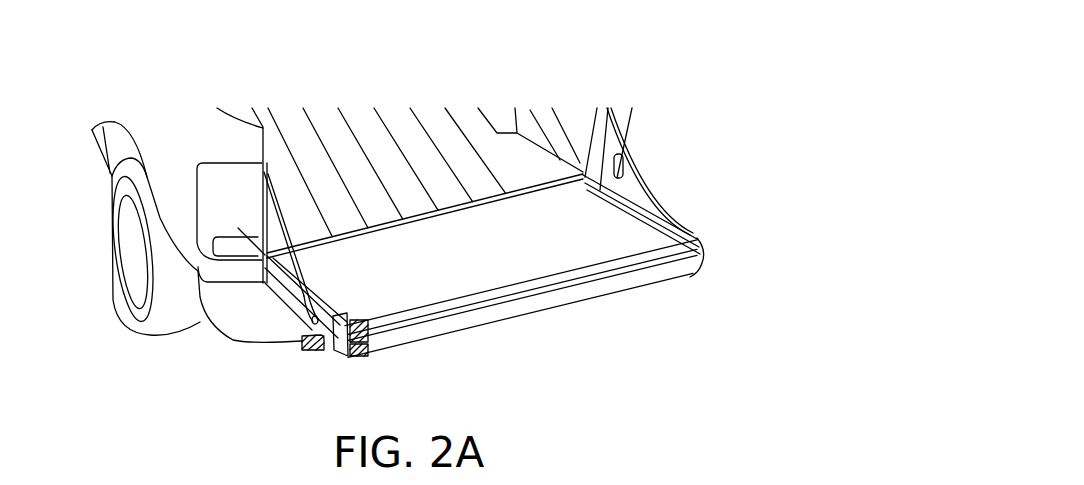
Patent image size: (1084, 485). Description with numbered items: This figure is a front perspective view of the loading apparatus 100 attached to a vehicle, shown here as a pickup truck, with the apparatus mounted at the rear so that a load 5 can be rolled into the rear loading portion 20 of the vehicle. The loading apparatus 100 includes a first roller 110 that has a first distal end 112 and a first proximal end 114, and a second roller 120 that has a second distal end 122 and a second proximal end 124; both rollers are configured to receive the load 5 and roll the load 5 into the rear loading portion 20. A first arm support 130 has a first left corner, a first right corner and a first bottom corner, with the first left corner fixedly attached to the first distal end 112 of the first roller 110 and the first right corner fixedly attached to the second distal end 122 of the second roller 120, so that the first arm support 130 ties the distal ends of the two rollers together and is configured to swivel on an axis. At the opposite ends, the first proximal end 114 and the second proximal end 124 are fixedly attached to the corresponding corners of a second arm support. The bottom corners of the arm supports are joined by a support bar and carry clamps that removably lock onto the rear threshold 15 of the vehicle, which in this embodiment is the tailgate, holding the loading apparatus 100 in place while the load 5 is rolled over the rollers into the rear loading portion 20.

The loading apparatus 100 is at (664, 83).
The load 5 is at (136, 119).
The rear loading portion 20 is at (530, 168).
The first roller 110 is at (523, 303).
The first proximal end 114 is at (689, 247).
The second proximal end 124 is at (689, 277).
The second roller 120 is at (580, 307).
The first arm support 130 is at (342, 348).
The first distal end 112 is at (375, 333).
The second distal end 122 is at (377, 359).
The rear threshold 15 is at (326, 340).